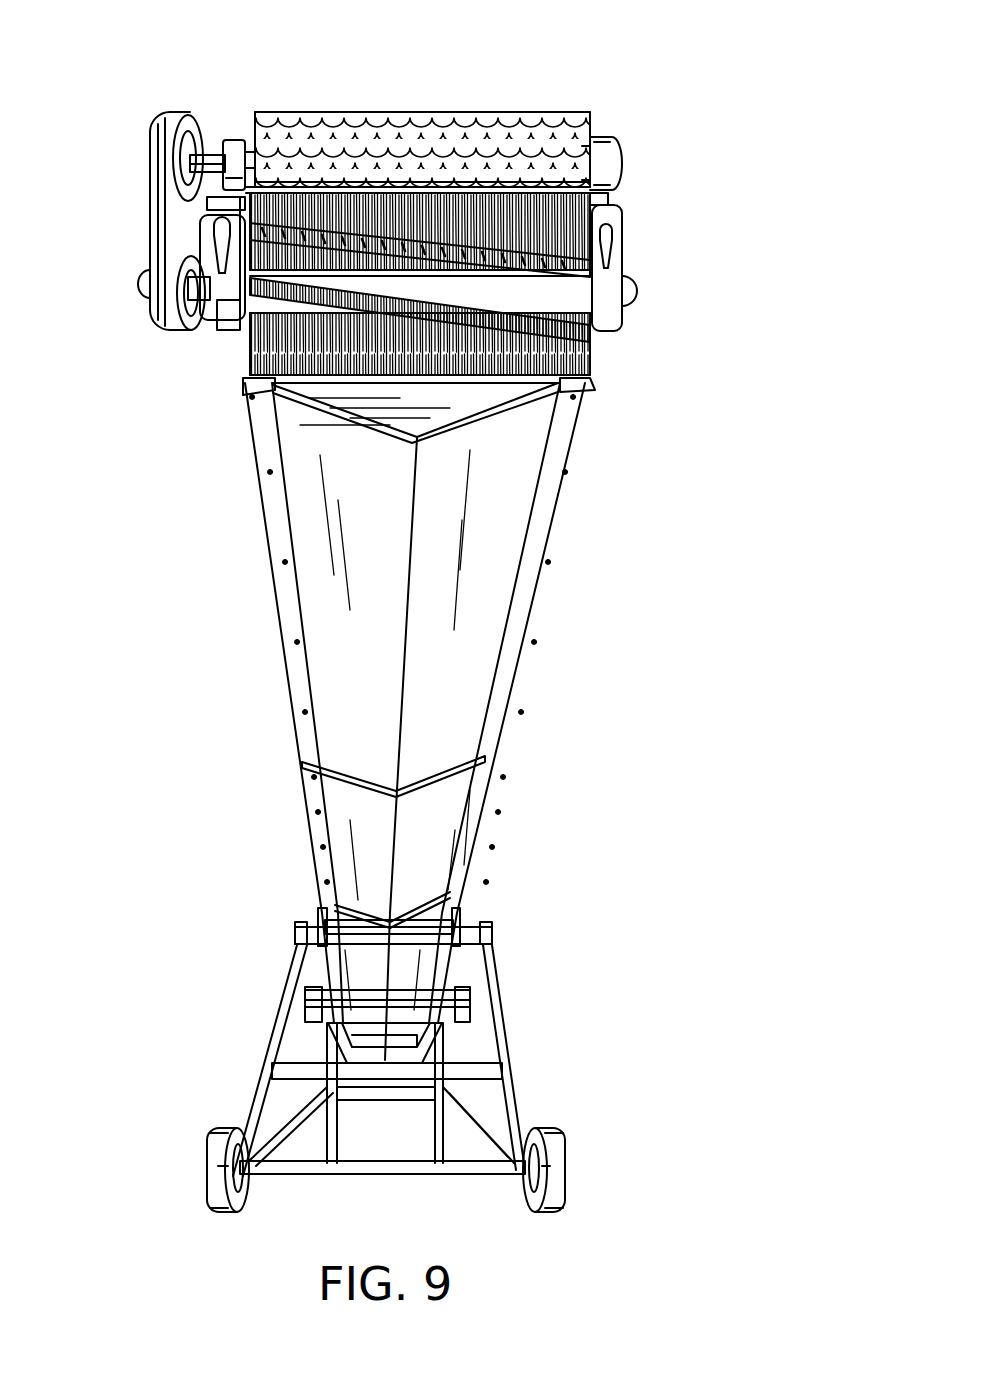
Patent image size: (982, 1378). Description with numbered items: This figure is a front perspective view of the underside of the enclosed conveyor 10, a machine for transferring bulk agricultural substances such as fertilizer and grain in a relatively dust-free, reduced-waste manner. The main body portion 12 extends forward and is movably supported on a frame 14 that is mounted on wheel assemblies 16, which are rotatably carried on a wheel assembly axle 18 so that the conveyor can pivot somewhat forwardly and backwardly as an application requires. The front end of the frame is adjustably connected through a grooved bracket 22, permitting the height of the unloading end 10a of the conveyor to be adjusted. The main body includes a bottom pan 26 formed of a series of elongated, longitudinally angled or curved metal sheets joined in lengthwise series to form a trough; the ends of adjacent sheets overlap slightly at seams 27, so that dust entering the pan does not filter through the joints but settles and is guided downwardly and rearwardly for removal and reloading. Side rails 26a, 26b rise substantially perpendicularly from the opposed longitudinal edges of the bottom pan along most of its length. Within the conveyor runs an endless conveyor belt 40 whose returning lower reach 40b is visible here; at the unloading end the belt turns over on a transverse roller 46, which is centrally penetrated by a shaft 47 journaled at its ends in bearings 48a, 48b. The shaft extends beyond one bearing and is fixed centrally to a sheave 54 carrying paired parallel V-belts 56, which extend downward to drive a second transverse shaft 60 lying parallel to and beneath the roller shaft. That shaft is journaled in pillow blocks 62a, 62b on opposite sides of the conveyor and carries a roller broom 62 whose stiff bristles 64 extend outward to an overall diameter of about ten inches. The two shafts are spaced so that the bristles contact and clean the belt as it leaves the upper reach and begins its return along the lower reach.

The enclosed conveyor 10 is at (795, 190).
The unloading end 10a is at (160, 414).
The main body portion 12 is at (652, 514).
The frame 14 is at (558, 1076).
The wheel assemblies 16 is at (213, 1170).
The wheel assembly axle 18 is at (305, 1167).
The grooved bracket 22 is at (460, 918).
The bottom pan 26 is at (485, 672).
The side rail 26a is at (245, 345).
The side rail 26b is at (585, 382).
The seams 27 is at (460, 765).
The endless conveyor belt 40 is at (500, 118).
The lower reach 40b is at (595, 197).
The roller 46 is at (595, 137).
The shaft 47 is at (212, 157).
The bearing 48a is at (237, 143).
The bearing 48b is at (605, 160).
The sheave 54 is at (190, 127).
The V-belts 56 is at (176, 112).
The shaft 60 is at (630, 295).
The roller broom 62 is at (580, 300).
The pillow block 62a is at (218, 300).
The pillow block 62b is at (605, 287).
The bristles 64 is at (595, 358).